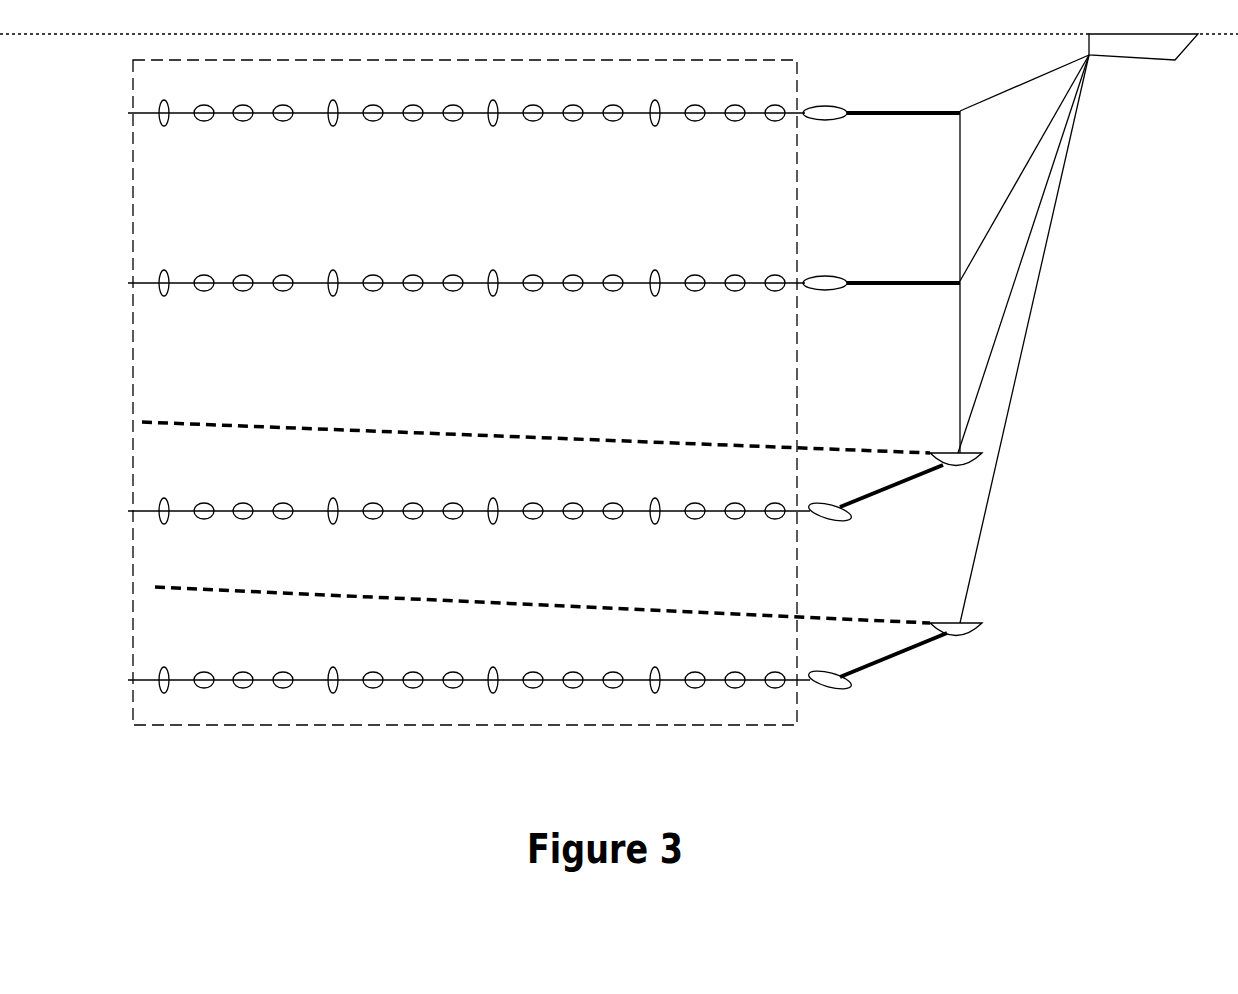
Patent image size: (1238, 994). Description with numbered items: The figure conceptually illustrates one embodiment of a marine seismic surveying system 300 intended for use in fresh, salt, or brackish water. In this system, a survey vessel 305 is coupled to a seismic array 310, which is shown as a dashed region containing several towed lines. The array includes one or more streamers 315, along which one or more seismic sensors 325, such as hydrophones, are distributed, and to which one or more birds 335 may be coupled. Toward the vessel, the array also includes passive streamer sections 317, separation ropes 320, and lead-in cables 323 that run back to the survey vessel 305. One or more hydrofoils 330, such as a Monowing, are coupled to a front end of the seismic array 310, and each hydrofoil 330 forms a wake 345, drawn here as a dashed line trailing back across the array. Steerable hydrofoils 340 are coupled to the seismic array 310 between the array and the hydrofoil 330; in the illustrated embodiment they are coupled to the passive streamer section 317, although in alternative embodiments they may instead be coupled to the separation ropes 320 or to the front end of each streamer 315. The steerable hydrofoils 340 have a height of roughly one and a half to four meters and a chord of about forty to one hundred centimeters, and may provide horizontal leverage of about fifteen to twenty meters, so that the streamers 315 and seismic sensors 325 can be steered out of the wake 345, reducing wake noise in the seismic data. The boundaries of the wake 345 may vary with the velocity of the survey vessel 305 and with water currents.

The marine seismic surveying system 300 is at (1182, 200).
The survey vessel 305 is at (1140, 59).
The seismic array 310 is at (133, 405).
The streamer 315 is at (592, 113).
The passive streamer section 317 is at (940, 115).
The separation rope 320 is at (960, 240).
The lead-in cable 323 is at (1040, 282).
The seismic sensor 325 is at (452, 120).
The hydrofoil 330 is at (965, 635).
The bird 335 is at (333, 125).
The steerable hydrofoil 340 is at (833, 690).
The wake 345 is at (432, 432).